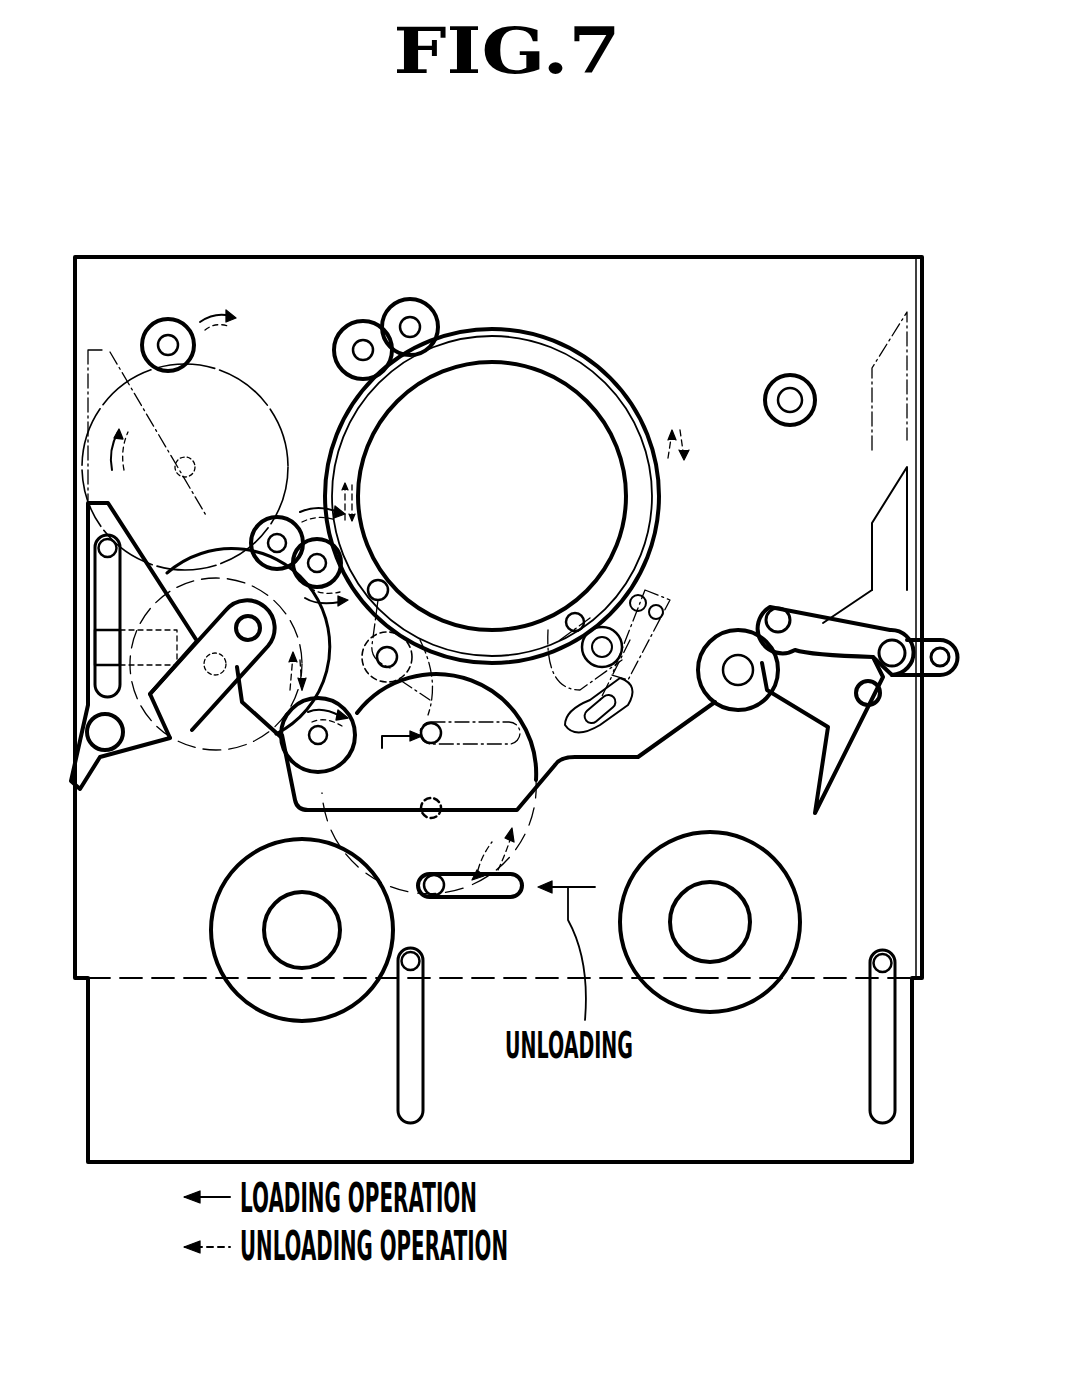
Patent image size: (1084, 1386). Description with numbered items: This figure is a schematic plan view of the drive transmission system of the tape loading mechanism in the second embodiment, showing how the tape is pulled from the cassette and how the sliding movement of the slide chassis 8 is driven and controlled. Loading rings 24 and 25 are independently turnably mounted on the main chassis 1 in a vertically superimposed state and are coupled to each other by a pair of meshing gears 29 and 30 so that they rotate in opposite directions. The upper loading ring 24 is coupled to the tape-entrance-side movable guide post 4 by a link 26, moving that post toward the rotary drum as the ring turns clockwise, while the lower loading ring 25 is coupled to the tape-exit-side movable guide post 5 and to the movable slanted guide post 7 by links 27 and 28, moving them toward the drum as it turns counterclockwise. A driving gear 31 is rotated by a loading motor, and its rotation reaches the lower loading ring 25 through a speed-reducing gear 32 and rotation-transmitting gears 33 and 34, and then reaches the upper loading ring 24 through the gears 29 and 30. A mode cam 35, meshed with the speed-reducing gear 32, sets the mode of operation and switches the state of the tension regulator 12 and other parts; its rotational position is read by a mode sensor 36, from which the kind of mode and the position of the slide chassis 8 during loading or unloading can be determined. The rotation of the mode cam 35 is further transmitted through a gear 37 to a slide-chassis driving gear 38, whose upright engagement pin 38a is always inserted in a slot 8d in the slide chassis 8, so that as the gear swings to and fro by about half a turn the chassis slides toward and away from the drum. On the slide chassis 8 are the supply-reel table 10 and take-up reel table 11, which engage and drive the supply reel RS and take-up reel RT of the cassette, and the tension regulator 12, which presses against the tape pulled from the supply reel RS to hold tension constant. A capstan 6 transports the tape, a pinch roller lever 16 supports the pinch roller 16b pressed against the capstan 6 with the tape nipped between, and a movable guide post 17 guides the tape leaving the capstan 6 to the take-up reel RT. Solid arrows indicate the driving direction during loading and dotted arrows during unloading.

The main chassis 1 is at (716, 257).
The tape-entrance-side movable guide post 4 is at (405, 632).
The tape-exit-side movable guide post 5 is at (566, 632).
The capstan 6 is at (790, 395).
The movable slanted guide post 7 is at (667, 745).
The slide chassis 8 is at (644, 1162).
The slot 8d is at (480, 897).
The supply-reel table 10 is at (250, 1015).
The take-up reel table 11 is at (672, 1005).
The tension regulator 12 is at (132, 762).
The pinch roller lever 16 is at (852, 742).
The pinch roller 16b is at (748, 690).
The movable guide post 17 is at (778, 620).
The upper loading ring 24 is at (495, 345).
The lower loading ring 25 is at (608, 362).
The link 26 is at (378, 580).
The link 27 is at (656, 585).
The link 28 is at (667, 590).
The gear 29 is at (405, 299).
The gear 30 is at (358, 320).
The driving gear 31 is at (153, 333).
The speed-reducing gear 32 is at (268, 398).
The rotation-transmitting gear 33 is at (262, 522).
The rotation-transmitting gear 34 is at (246, 612).
The mode cam 35 is at (226, 745).
The mode sensor 36 is at (172, 745).
The gear 37 is at (342, 700).
The slide-chassis driving gear 38 is at (555, 770).
The engagement pin 38a is at (436, 897).
The supply reel RS is at (316, 1002).
The take-up reel RT is at (732, 1000).